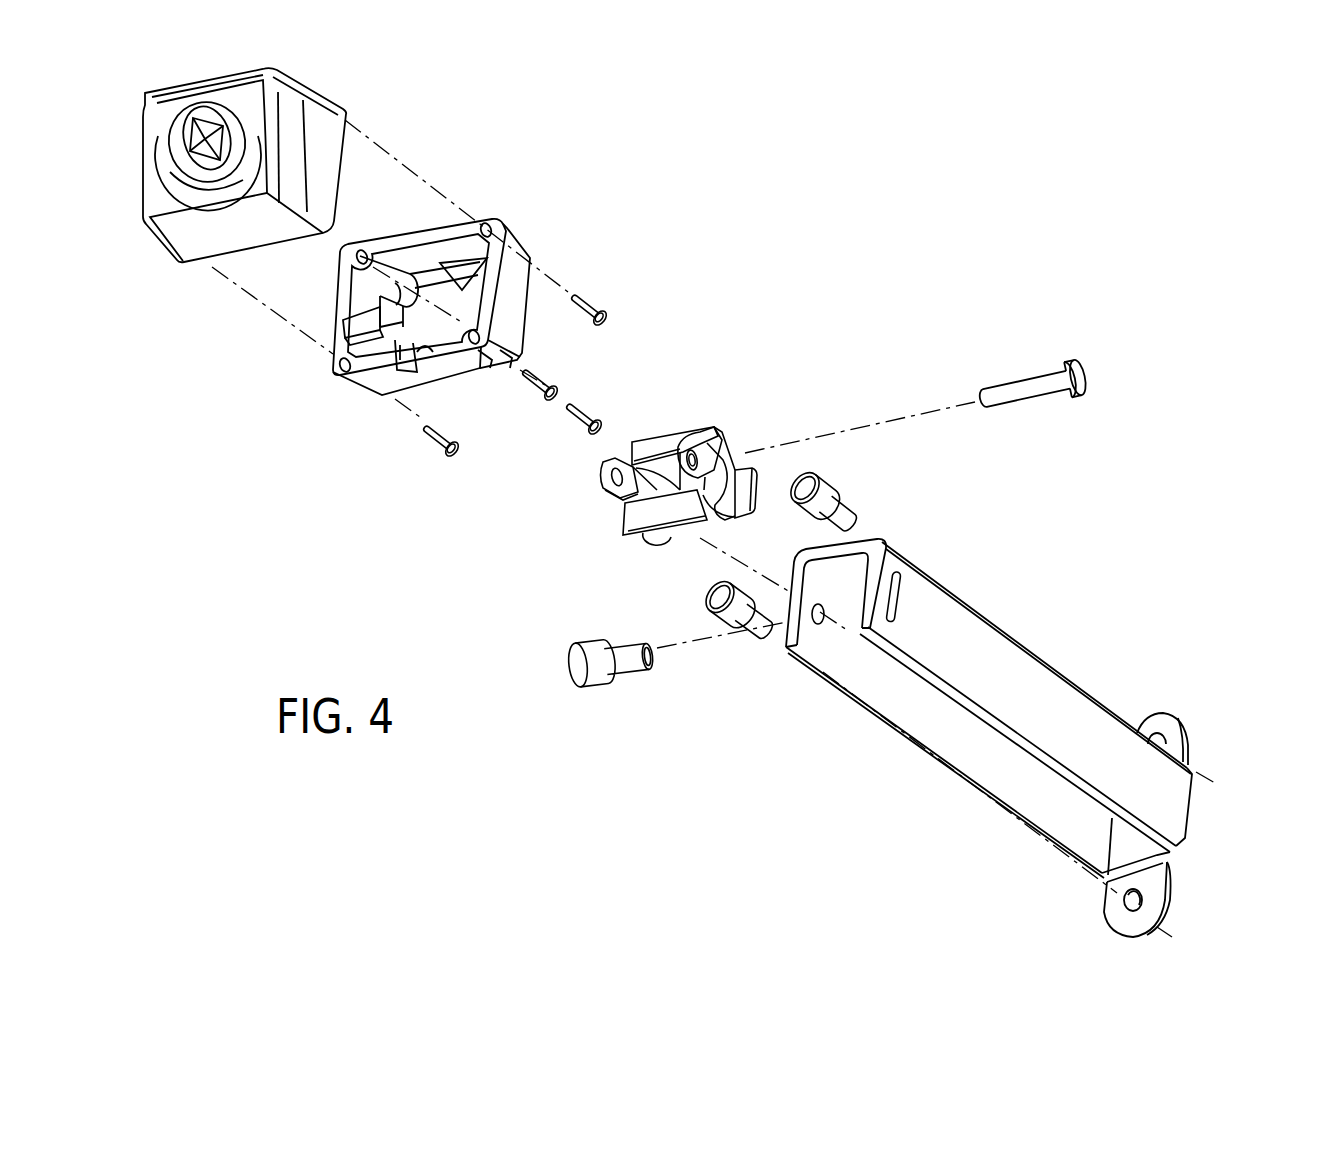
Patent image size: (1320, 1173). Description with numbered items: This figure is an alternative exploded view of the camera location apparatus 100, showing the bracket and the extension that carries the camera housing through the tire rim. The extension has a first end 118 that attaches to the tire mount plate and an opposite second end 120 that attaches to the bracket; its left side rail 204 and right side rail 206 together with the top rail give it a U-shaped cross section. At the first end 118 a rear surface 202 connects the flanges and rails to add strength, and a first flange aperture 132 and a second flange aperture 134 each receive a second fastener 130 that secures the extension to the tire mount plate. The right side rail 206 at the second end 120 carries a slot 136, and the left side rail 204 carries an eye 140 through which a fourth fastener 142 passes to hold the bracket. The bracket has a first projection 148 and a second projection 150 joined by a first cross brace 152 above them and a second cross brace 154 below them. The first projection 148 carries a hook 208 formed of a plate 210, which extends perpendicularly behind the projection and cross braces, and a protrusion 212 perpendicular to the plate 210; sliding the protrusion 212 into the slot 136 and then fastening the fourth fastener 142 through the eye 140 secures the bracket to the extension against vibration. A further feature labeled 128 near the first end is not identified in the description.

The camera location apparatus 100 is at (786, 771).
The first end 118 is at (1195, 770).
The second end 120 is at (850, 542).
The second end of bracket 128 is at (1190, 850).
The second fastener 130 is at (848, 488).
The first flange aperture 132 is at (1153, 730).
The second flange aperture 134 is at (1137, 905).
The slot 136 is at (900, 614).
The eye 140 is at (818, 626).
The fourth fastener 142 is at (608, 674).
The first projection 148 is at (707, 455).
The second projection 150 is at (604, 488).
The first cross brace 152 is at (663, 443).
The second cross brace 154 is at (664, 513).
The rear surface 202 is at (1127, 846).
The left side rail 204 is at (957, 766).
The right side rail 206 is at (1007, 670).
The hook 208 is at (724, 452).
The plate 210 is at (727, 510).
The protrusion 212 is at (735, 466).